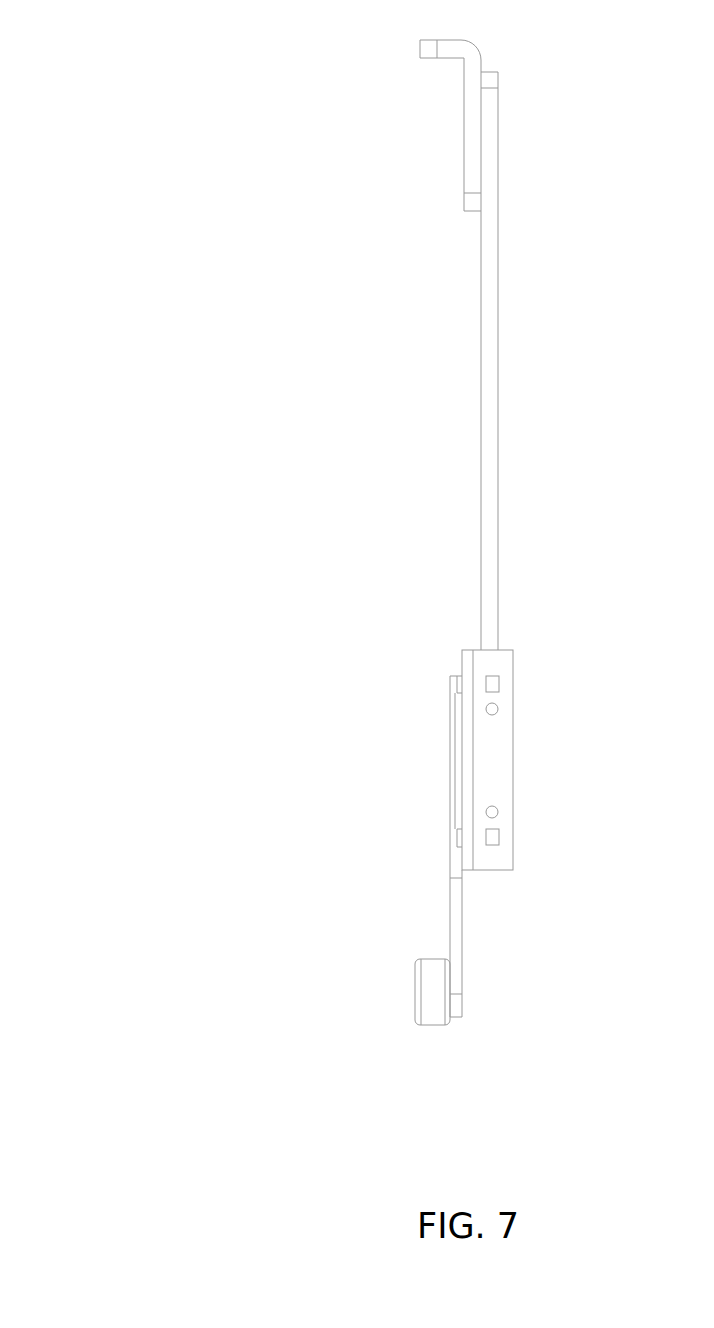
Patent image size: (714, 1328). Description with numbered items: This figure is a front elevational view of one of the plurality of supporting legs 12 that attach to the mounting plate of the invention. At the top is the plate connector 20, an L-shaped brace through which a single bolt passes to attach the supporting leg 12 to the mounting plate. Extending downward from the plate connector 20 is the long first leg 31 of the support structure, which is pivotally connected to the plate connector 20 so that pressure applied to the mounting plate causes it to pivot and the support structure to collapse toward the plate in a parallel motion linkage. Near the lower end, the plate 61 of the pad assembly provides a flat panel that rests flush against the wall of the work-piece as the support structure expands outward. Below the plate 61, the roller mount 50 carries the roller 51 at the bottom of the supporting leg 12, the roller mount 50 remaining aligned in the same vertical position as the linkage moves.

The supporting leg 12 is at (133, 40).
The plate connector 20 is at (431, 49).
The first leg 31 is at (487, 403).
The plate 61 is at (502, 760).
The roller mount 50 is at (458, 933).
The roller 51 is at (433, 1015).